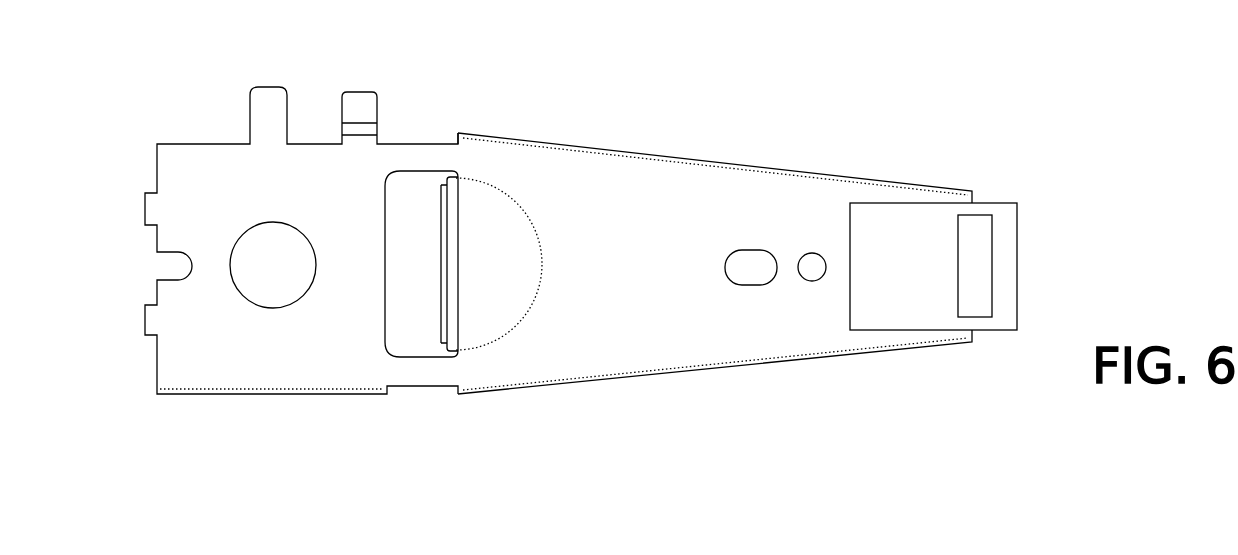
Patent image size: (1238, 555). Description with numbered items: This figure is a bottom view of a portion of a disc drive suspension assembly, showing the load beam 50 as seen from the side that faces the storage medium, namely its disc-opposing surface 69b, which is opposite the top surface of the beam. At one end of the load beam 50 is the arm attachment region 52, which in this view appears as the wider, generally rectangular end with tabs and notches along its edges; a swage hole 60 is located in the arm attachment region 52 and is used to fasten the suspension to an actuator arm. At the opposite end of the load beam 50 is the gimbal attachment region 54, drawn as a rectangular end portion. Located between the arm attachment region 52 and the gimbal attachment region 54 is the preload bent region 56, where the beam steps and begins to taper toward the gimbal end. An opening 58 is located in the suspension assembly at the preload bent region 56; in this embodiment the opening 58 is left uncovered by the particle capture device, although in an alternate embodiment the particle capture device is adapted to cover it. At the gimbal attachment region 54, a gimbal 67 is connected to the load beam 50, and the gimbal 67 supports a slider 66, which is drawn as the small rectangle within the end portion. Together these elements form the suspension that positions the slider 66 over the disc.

The load beam 50 is at (755, 119).
The arm attachment region 52 is at (225, 144).
The gimbal attachment region 54 is at (883, 182).
The preload bent region 56 is at (443, 140).
The opening 58 is at (387, 245).
The swage hole 60 is at (242, 297).
The slider 66 is at (972, 305).
The gimbal 67 is at (1001, 217).
The disc-opposing surface 69b is at (637, 182).